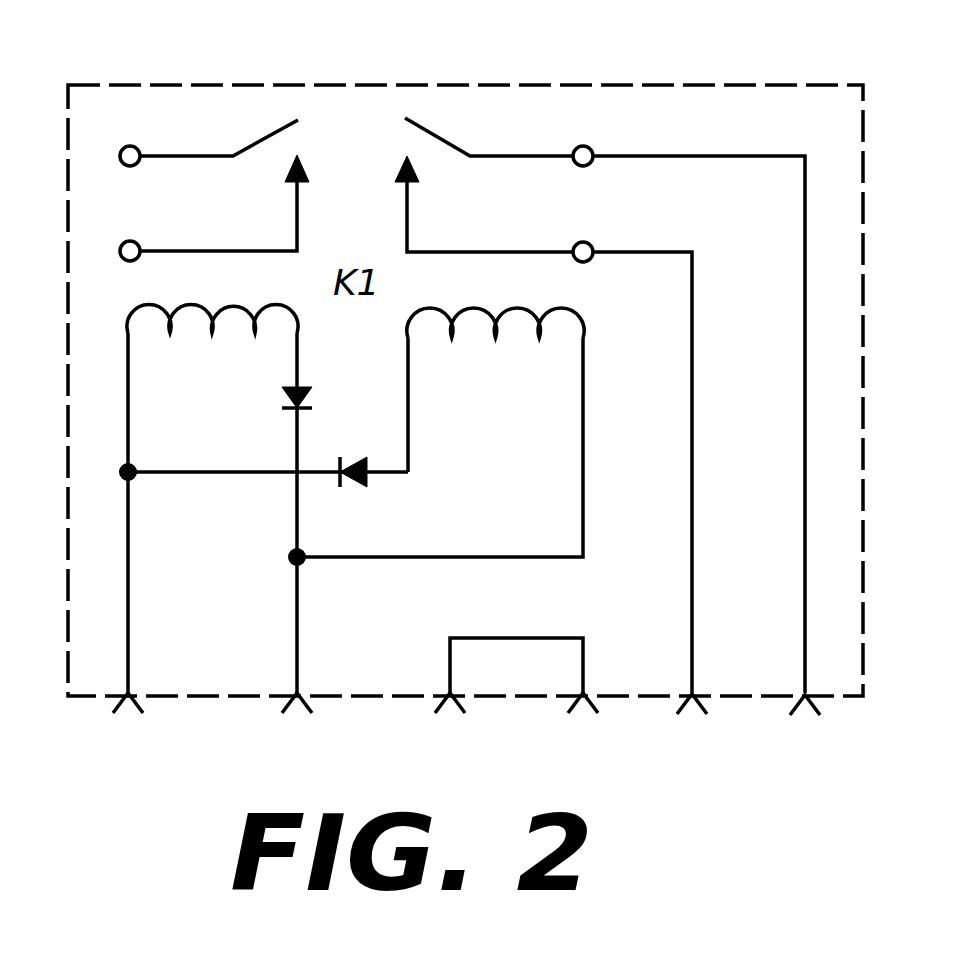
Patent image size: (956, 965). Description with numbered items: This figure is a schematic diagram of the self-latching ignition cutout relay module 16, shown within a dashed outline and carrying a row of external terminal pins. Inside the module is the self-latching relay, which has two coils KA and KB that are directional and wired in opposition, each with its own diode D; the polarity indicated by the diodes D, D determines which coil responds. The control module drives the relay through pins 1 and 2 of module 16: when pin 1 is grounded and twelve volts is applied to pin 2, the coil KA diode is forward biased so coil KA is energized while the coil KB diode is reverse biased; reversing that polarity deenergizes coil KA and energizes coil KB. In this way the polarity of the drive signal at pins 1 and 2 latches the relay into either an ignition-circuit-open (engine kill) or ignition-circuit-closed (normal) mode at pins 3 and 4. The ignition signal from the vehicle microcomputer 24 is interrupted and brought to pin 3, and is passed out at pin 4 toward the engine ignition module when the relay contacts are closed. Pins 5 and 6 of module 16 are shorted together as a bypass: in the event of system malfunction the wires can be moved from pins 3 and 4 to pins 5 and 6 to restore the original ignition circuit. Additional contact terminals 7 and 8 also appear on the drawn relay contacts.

The self-latching ignition cutout relay module 16 is at (600, 86).
The vehicle microcomputer 24 is at (547, 638).
The coil KA is at (207, 398).
The coil KB is at (551, 398).
The diode D is at (268, 433).
The pin 1 is at (297, 729).
The pin 2 is at (128, 729).
The pin 3 is at (803, 730).
The pin 4 is at (692, 729).
The pin 5 is at (450, 729).
The pin 6 is at (583, 729).
The relay contact terminal 7 is at (689, 398).
The relay contact terminal 8 is at (632, 446).